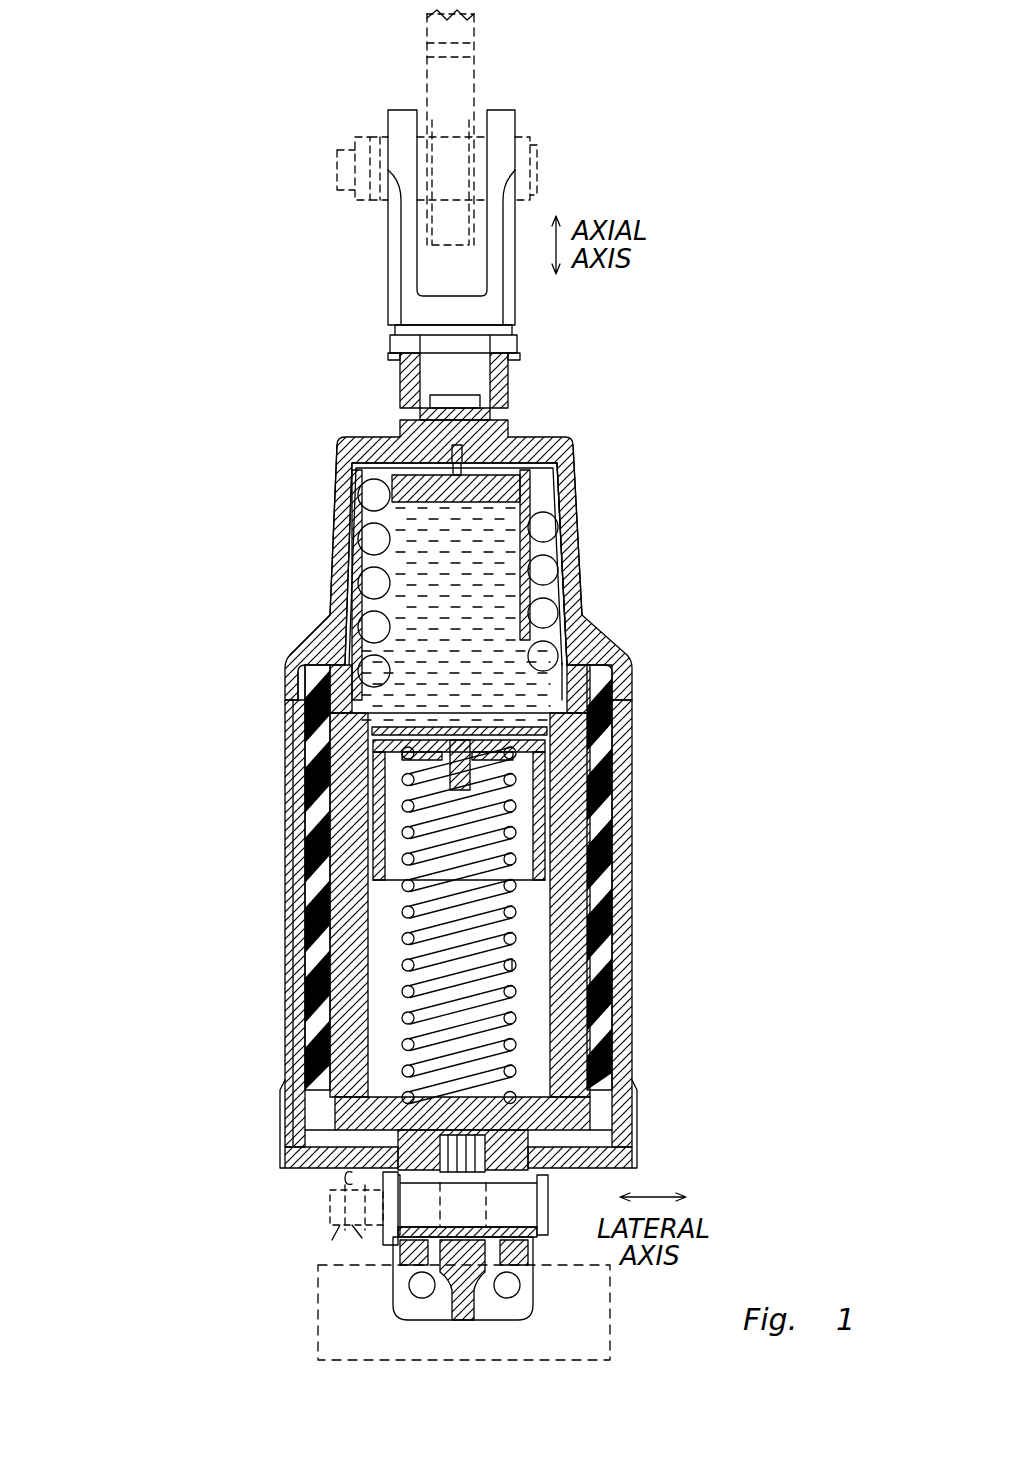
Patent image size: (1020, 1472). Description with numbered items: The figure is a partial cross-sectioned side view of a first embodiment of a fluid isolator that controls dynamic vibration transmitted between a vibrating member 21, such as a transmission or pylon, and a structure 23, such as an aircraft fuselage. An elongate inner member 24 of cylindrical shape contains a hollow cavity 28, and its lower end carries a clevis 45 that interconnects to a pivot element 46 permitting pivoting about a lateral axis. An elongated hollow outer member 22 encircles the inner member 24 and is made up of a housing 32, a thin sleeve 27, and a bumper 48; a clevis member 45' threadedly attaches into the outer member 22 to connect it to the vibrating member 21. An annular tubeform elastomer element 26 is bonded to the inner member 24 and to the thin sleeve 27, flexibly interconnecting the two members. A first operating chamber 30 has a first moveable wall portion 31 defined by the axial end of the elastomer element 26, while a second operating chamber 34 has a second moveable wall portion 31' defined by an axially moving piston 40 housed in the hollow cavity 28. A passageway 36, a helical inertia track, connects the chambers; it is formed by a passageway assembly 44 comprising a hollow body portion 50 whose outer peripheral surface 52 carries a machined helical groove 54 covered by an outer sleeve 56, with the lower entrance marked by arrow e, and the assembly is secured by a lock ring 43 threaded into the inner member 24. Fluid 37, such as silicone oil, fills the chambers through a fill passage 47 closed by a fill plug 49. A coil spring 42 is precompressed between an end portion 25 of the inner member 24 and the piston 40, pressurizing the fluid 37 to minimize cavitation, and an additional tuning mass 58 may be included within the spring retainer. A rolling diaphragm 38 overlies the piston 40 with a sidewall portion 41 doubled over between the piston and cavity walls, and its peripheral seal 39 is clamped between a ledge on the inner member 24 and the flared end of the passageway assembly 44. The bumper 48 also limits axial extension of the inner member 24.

The vibrating member 21 is at (478, 58).
The clevis member 45' is at (488, 217).
The fill passage 47 is at (418, 416).
The fill plug 49 is at (466, 408).
The housing 32 is at (342, 455).
The passageway assembly 44 is at (566, 520).
The outer sleeve 56 is at (562, 583).
The first operating chamber 30 is at (580, 560).
The hollow body portion 50 is at (506, 490).
The passageway 36 is at (395, 497).
The outer peripheral surface 52 is at (345, 548).
The helical groove 54 is at (558, 612).
The lock ring 43 is at (566, 641).
The passageway lower entrance/exit e is at (316, 632).
The outer member 22 is at (328, 600).
The first moveable wall portion 31 is at (402, 912).
The second operating chamber 34 is at (600, 718).
The tubeform elastomer element 26 is at (318, 877).
The sidewall portion 41 is at (318, 800).
The fluid 37 is at (370, 725).
The inner member 24 is at (350, 940).
The thin sleeve 27 is at (340, 838).
The second moveable wall portion 31' is at (240, 730).
The peripheral seal 39 is at (395, 722).
The piston 40 is at (556, 747).
The rolling diaphragm 38 is at (560, 810).
The additional tuning mass 58 is at (493, 753).
The spring 42 is at (513, 967).
The hollow cavity 28 is at (395, 988).
The end portion 25 is at (545, 1084).
The bumper 48 is at (312, 1172).
The structure 23 is at (318, 1278).
The clevis 45 is at (491, 1284).
The pivot element 46 is at (405, 1303).